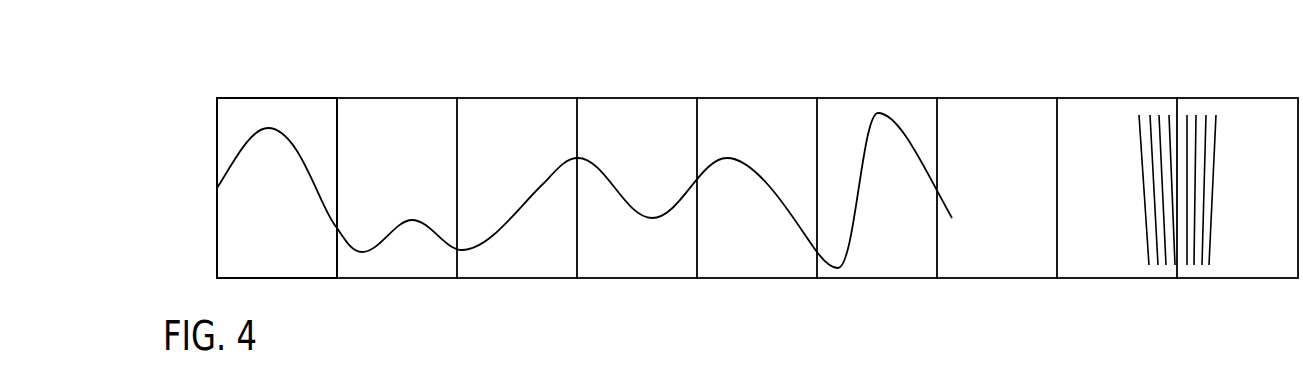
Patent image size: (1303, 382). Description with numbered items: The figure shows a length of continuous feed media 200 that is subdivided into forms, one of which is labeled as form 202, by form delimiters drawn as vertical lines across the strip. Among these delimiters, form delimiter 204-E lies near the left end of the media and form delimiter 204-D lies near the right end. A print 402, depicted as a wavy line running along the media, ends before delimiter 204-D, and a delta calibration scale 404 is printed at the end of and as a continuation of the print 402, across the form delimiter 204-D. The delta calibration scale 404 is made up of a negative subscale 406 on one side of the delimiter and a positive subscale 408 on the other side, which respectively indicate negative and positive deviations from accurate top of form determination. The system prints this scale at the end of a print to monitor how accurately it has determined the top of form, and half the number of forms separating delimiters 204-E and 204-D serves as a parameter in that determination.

The continuous feed media 200 is at (660, 97).
The form 202 is at (286, 254).
The form delimiter 204-E is at (217, 262).
The form delimiter 204-D is at (1179, 272).
The print 402 is at (545, 182).
The delta calibration scale 404 is at (1177, 155).
The negative subscale 406 is at (1143, 210).
The positive subscale 408 is at (1210, 210).